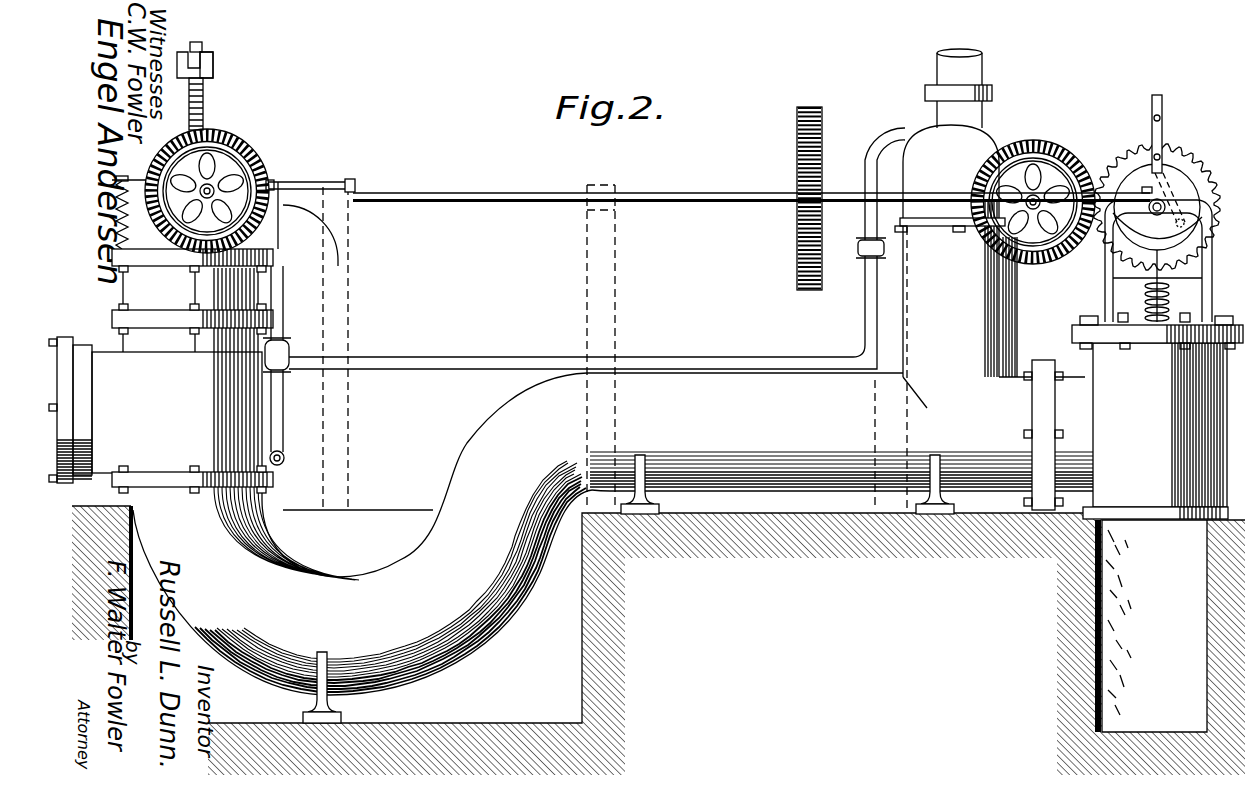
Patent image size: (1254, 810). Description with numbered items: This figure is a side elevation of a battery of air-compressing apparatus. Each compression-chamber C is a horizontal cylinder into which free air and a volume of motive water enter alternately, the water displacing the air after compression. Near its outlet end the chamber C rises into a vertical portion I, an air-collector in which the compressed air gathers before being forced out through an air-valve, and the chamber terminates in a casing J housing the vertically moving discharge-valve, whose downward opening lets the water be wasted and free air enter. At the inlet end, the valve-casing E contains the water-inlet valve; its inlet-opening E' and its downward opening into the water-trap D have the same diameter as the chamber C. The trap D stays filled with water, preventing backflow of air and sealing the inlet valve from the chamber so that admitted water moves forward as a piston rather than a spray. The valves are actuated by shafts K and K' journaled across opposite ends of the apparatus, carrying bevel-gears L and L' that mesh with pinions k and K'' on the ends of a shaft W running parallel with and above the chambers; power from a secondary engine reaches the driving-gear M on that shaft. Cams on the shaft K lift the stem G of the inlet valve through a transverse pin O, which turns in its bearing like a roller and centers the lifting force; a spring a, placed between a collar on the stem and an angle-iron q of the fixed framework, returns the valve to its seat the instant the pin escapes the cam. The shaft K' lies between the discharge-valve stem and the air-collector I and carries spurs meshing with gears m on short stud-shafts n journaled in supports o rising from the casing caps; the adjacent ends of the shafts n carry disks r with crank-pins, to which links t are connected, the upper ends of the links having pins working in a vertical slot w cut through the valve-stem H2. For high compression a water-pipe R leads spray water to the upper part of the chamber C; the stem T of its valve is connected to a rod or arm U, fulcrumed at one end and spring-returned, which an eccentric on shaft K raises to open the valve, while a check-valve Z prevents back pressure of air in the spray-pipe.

The valve-stem G is at (201, 45).
The angle-iron q is at (215, 62).
The spring a is at (205, 98).
The bevel-gear L is at (207, 168).
The shaft K is at (225, 180).
The pinion k is at (276, 178).
The rod or arm U is at (320, 186).
The shaft W is at (513, 195).
The valve-stem T is at (284, 286).
The inlet-opening E' is at (70, 393).
The valve-casing E is at (182, 371).
The water-pipe R is at (712, 362).
The compression-chamber C is at (840, 443).
The water-trap D is at (362, 548).
The driving-gear M is at (795, 263).
The check-valve Z is at (866, 247).
The vertical portion I is at (990, 213).
The shaft K' is at (1014, 202).
The bevel-gear L' is at (1033, 178).
The pinion K'' is at (1047, 179).
The short stud-shaft n is at (1150, 206).
The vertical slot w is at (1153, 157).
The valve-stem H2 is at (1150, 100).
The link t is at (1153, 122).
The support o is at (1157, 207).
The disk r is at (1149, 270).
The gear m is at (1123, 247).
The pin O is at (1105, 303).
The casing J is at (1085, 377).